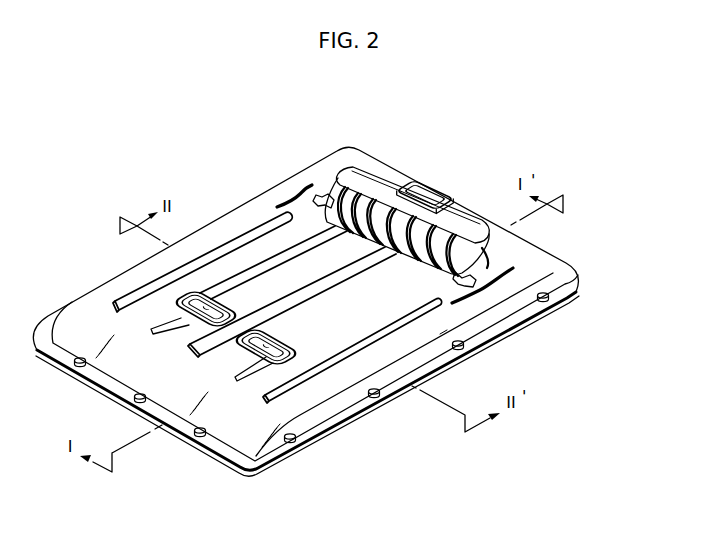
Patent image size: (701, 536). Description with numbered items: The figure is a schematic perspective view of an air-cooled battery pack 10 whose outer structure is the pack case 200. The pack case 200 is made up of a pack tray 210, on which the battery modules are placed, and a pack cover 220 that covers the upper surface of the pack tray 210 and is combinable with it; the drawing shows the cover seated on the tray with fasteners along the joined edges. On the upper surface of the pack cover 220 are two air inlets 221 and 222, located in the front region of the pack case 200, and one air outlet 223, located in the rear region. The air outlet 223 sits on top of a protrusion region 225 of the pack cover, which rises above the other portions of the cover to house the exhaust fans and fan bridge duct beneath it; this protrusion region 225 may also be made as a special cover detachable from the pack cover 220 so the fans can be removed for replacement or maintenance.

The air-cooled battery pack 10 is at (120, 101).
The pack case 200 is at (621, 255).
The pack tray 210 is at (556, 302).
The pack cover 220 is at (556, 274).
The air inlet 221 is at (235, 379).
The air inlet 222 is at (152, 333).
The air outlet 223 is at (432, 187).
The protrusion region of the pack cover 225 is at (355, 170).